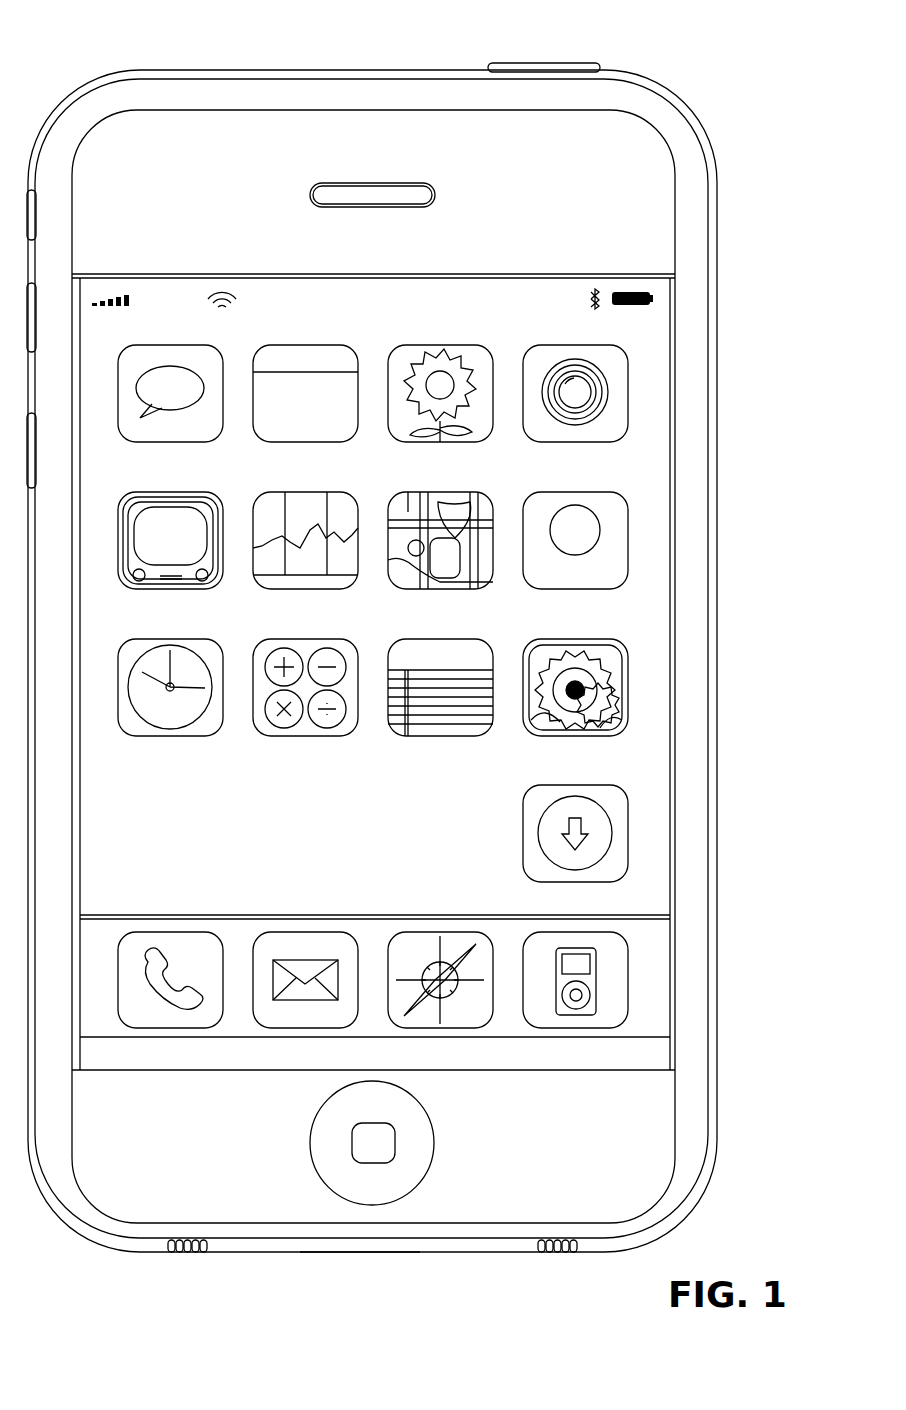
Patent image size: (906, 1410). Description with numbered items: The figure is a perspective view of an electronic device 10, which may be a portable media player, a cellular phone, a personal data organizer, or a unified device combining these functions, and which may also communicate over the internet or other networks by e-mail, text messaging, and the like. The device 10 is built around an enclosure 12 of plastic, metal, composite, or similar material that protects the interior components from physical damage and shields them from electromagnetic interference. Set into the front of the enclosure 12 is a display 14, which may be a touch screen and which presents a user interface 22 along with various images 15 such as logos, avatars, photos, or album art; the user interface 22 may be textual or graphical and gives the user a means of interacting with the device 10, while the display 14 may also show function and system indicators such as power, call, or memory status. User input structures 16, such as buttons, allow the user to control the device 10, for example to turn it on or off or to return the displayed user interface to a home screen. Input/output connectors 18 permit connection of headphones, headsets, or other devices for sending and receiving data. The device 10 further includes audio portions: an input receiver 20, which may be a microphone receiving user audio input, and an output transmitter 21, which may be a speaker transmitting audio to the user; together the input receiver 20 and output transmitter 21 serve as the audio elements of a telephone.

The electronic device 10 is at (154, 36).
The enclosure 12 is at (728, 262).
The display 14 is at (650, 652).
The images 15 is at (522, 850).
The user input structures 16 is at (585, 65).
The input/output connectors 18 is at (352, 1264).
The input receiver 20 is at (182, 1262).
The output transmitter 21 is at (405, 183).
The user interface 22 is at (652, 432).